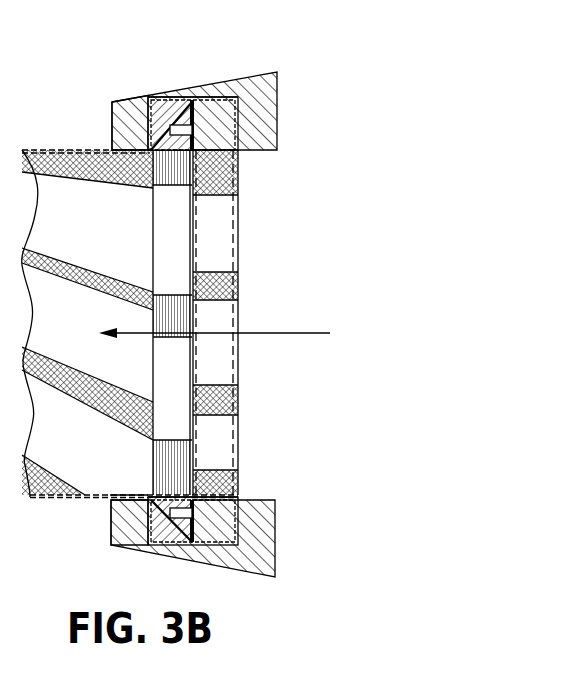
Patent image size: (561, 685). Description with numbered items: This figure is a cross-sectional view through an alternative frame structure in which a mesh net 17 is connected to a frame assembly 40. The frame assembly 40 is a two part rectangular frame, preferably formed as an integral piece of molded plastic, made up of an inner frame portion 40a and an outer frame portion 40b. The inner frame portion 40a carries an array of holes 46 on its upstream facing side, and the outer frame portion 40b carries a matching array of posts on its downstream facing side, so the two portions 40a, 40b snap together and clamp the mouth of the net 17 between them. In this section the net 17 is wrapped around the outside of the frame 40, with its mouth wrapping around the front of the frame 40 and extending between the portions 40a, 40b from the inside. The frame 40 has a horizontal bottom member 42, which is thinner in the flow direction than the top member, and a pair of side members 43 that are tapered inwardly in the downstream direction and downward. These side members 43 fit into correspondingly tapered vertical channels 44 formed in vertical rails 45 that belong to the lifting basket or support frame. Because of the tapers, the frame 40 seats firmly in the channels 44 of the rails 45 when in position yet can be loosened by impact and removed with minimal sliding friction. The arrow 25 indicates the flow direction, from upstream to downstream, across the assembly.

The mesh net 17 is at (83, 231).
The flow direction arrow 25 is at (296, 333).
The frame assembly 40 is at (263, 279).
The inner frame portion 40a is at (162, 102).
The outer frame portion 40b is at (221, 85).
The bottom member 42 is at (150, 368).
The side members 43 is at (251, 125).
The vertical channels 44 is at (240, 99).
The vertical rails 45 is at (112, 121).
The holes 46 is at (185, 98).